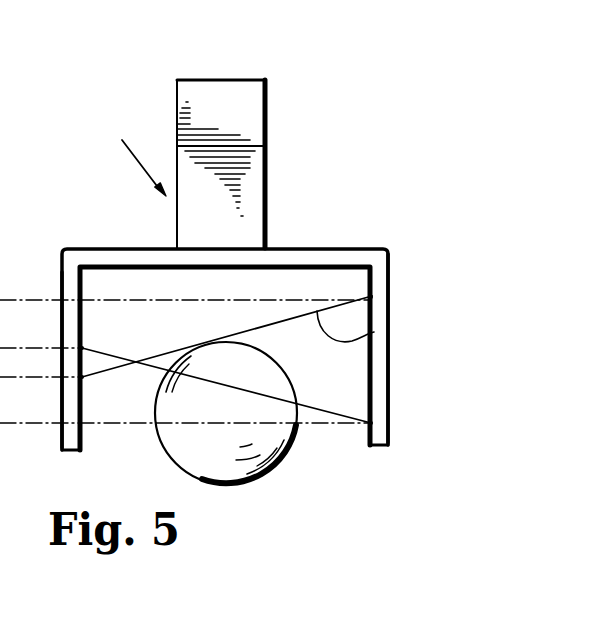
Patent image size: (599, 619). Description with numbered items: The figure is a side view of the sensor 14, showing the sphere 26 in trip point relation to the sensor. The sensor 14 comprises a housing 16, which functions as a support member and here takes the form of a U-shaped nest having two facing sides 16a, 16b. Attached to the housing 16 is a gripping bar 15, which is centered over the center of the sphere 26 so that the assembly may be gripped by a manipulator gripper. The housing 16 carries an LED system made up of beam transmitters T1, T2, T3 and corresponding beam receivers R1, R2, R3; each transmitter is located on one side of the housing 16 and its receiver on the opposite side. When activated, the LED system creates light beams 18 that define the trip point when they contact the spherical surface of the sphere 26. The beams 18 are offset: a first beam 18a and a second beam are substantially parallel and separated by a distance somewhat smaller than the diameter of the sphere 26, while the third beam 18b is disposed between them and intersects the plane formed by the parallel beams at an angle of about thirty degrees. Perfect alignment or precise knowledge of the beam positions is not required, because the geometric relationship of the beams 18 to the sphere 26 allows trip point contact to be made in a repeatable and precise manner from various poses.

The sensor 14 is at (134, 150).
The gripping bar 15 is at (265, 82).
The housing 16 is at (140, 247).
The facing side 16a is at (389, 250).
The facing side 16b is at (60, 272).
The light beams 18 is at (279, 385).
The beam 18a is at (325, 404).
The third beam 18b is at (374, 332).
The beam transmitter T1 is at (419, 437).
The beam transmitter T2 is at (372, 423).
The beam transmitter T3 is at (372, 296).
The beam receiver R1 is at (123, 334).
The beam receiver R2 is at (83, 348).
The beam receiver R3 is at (83, 378).
The sphere 26 is at (255, 484).